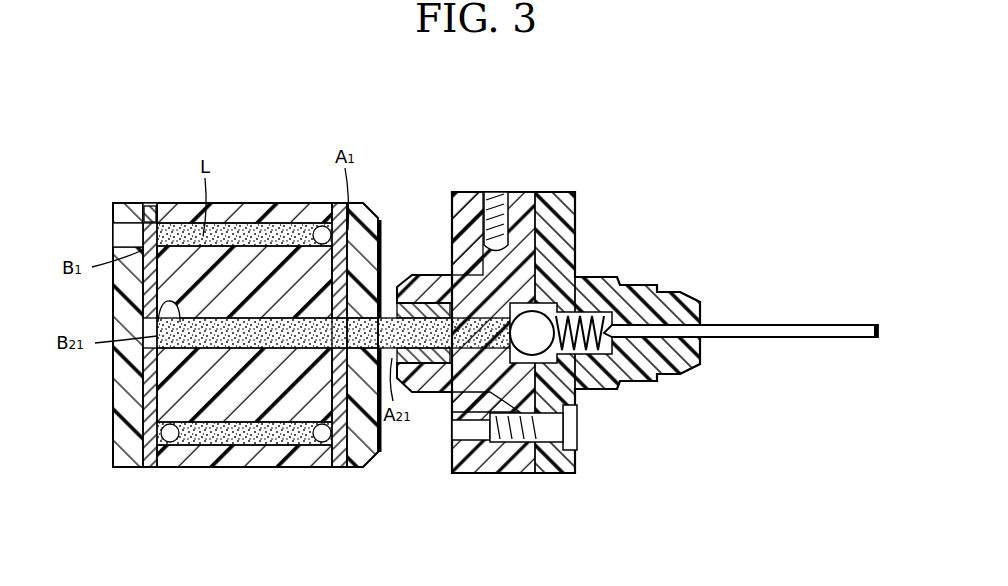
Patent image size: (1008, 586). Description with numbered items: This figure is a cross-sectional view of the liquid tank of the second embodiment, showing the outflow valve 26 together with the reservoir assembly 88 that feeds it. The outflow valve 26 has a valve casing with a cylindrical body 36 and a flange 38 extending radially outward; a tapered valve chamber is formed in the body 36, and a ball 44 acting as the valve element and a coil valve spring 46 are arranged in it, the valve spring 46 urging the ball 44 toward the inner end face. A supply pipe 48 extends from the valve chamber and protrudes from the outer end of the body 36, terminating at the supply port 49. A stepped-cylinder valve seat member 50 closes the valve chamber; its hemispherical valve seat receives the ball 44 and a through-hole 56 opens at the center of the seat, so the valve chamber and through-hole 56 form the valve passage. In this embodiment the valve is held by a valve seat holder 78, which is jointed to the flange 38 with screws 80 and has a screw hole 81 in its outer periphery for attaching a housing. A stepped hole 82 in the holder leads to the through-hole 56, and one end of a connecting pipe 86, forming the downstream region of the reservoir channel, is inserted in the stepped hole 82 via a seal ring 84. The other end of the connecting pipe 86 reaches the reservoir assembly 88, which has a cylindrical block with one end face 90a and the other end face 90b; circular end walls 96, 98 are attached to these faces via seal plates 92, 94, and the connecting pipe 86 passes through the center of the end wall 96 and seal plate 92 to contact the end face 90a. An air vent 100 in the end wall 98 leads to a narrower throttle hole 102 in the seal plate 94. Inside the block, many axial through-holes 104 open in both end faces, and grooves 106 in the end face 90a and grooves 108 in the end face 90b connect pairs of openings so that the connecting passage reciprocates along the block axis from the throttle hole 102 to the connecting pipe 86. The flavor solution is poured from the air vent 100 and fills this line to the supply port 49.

The outflow valve 26 is at (625, 265).
The cylindrical body 36 is at (645, 375).
The flange 38 is at (550, 212).
The ball 44 is at (571, 440).
The valve spring 46 is at (586, 356).
The supply pipe 48 is at (797, 325).
The supply port 49 is at (878, 337).
The valve seat member 50 is at (470, 275).
The through-hole 56 is at (432, 290).
The valve seat holder 78 is at (488, 460).
The screws 80 is at (548, 445).
The screw hole 81 is at (495, 215).
The stepped hole 82 is at (425, 386).
The seal ring 84 is at (443, 400).
The connecting pipe 86 is at (400, 300).
The reservoir assembly 88 is at (248, 482).
The one end face 90a is at (383, 297).
The other end face 90b is at (155, 404).
The seal plate 92 is at (337, 452).
The seal plate 94 is at (151, 455).
The end wall 96 is at (364, 455).
The end wall 98 is at (127, 450).
The air vent 100 is at (128, 235).
The throttle hole 102 is at (150, 220).
The through-holes 104 is at (247, 235).
The grooves 106 is at (316, 233).
The grooves 108 is at (162, 312).